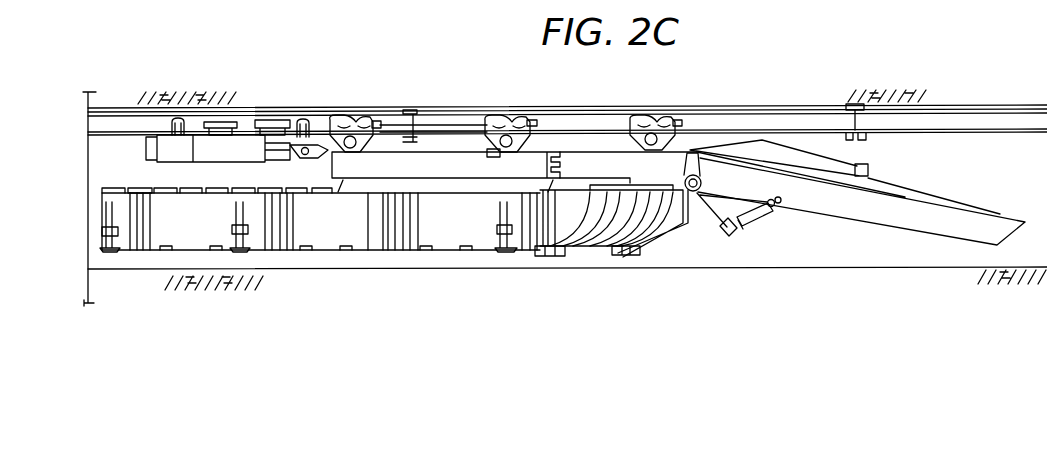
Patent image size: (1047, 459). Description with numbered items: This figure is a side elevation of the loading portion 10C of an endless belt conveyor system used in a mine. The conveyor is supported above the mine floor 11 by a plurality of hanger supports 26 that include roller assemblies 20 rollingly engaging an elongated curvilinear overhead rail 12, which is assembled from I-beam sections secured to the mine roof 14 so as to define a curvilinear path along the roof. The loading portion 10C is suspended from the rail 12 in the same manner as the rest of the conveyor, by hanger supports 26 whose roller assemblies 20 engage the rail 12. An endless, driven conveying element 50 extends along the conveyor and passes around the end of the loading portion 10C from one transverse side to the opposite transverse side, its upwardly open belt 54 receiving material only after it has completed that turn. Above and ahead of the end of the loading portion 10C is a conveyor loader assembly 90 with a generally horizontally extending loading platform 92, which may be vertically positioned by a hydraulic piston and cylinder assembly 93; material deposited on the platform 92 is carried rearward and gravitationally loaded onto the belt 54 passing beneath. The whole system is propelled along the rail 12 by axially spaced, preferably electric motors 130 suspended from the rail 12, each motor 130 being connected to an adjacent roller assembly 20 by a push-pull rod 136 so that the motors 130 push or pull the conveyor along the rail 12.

The loading portion 10C is at (667, 167).
The floor 11 is at (478, 307).
The overhead rail 12 is at (590, 123).
The mine roof 14 is at (519, 88).
The roller assemblies 20 is at (358, 127).
The hanger supports 26 is at (487, 147).
The conveying element 50 is at (620, 222).
The belt 54 is at (280, 233).
The conveyor loader assembly 90 is at (843, 208).
The loading platform 92 is at (950, 204).
The hydraulic piston and cylinder assembly 93 is at (748, 222).
The motors 130 is at (245, 141).
The push-pull rod 136 is at (318, 147).